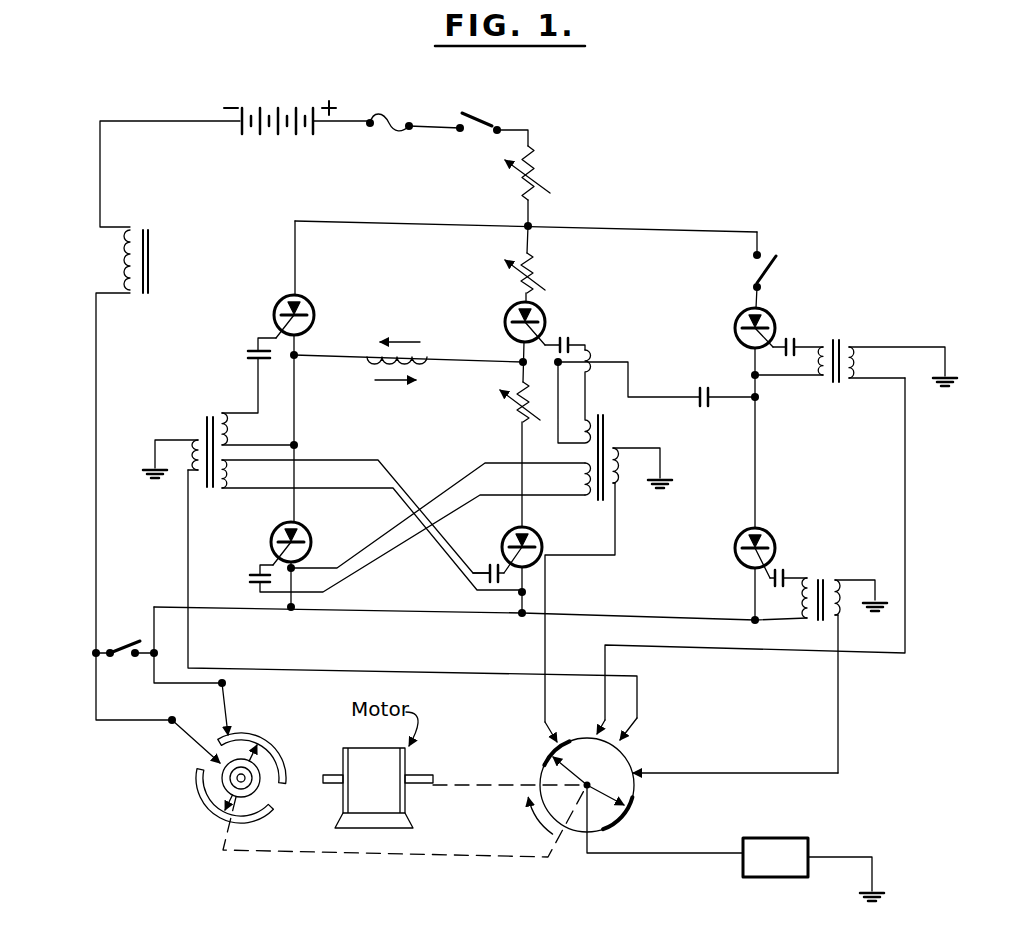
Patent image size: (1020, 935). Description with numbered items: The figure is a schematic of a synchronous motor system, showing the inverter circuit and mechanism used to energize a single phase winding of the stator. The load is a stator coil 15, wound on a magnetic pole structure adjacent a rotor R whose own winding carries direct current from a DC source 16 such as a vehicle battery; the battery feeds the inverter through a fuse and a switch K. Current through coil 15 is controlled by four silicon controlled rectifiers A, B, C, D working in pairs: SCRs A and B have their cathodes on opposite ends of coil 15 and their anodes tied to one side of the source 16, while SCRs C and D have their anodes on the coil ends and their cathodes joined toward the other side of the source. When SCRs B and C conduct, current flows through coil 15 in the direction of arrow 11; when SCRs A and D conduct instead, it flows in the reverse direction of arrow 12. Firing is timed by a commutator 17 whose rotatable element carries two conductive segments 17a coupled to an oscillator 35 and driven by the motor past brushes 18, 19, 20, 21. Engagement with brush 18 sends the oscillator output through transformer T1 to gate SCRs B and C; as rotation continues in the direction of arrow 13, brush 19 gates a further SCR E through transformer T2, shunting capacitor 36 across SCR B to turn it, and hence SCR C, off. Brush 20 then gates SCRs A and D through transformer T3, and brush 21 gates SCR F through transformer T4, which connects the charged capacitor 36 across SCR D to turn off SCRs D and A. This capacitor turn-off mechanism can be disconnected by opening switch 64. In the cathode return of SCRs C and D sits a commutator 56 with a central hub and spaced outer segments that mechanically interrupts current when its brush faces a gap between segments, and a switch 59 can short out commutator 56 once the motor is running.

The DC source 16 is at (264, 108).
The main switch K is at (490, 115).
The rotor R is at (150, 265).
The SCR A is at (304, 300).
The SCR B is at (545, 310).
The SCR C is at (309, 538).
The SCR D is at (538, 540).
The SCR E is at (773, 316).
The SCR F is at (772, 546).
The arrow 11 is at (412, 343).
The arrow 12 is at (400, 383).
The stator coil 15 is at (370, 366).
The capacitor 36 is at (708, 404).
The switch 64 is at (772, 268).
The transformer T1 is at (608, 441).
The transformer T2 is at (850, 340).
The transformer T3 is at (204, 412).
The transformer T4 is at (818, 578).
The switch 59 is at (140, 658).
The commutator 56 is at (207, 806).
The commutator 17 is at (630, 757).
The conductive segments 17a is at (563, 758).
The brush 18 is at (553, 742).
The brush 19 is at (592, 733).
The brush 20 is at (625, 739).
The brush 21 is at (641, 780).
The arrow 13 is at (538, 820).
The oscillator 35 is at (781, 838).